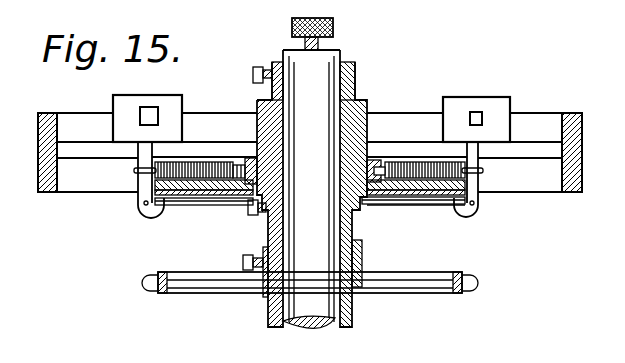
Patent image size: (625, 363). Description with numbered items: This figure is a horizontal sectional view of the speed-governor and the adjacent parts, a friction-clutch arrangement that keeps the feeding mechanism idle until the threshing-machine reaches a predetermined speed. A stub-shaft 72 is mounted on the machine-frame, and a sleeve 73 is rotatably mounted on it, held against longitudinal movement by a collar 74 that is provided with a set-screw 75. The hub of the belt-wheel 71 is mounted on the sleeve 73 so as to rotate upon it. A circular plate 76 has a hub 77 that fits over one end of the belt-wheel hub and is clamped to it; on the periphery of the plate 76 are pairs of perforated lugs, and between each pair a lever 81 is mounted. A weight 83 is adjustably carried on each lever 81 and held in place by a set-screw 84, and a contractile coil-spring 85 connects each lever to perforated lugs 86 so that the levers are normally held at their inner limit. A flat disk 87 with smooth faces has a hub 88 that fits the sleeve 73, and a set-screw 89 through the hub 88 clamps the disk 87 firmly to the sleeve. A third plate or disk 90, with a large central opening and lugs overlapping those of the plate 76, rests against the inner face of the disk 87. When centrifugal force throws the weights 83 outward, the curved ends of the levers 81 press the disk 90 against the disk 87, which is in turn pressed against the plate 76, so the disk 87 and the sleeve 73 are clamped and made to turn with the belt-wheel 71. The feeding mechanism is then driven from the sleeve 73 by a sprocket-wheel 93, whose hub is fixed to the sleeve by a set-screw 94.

The belt-wheel 71 is at (572, 133).
The stub-shaft 72 is at (314, 318).
The sleeve 73 is at (356, 96).
The collar 74 is at (353, 66).
The set-screw 75 is at (253, 72).
The circular plate 76 is at (190, 170).
The hub 77 is at (238, 165).
The lever 81 is at (144, 187).
The weight 83 is at (512, 100).
The set-screw 84 is at (482, 118).
The contractile coil-spring 85 is at (406, 162).
The perforated lugs 86 is at (378, 162).
The flat disk 87 is at (183, 200).
The hub 88 is at (362, 219).
The set-screw 89 is at (248, 212).
The third plate or disk 90 is at (165, 210).
The sprocket-wheel 93 is at (440, 284).
The set-screw 94 is at (243, 260).